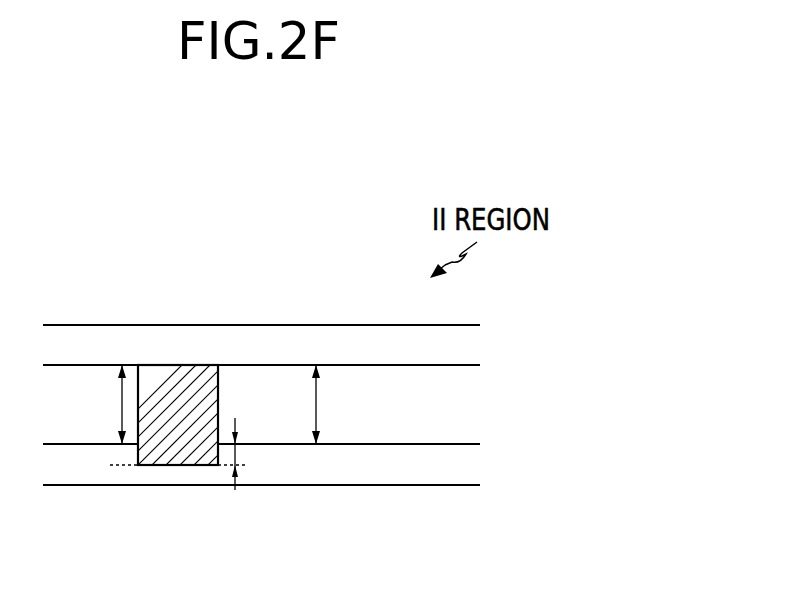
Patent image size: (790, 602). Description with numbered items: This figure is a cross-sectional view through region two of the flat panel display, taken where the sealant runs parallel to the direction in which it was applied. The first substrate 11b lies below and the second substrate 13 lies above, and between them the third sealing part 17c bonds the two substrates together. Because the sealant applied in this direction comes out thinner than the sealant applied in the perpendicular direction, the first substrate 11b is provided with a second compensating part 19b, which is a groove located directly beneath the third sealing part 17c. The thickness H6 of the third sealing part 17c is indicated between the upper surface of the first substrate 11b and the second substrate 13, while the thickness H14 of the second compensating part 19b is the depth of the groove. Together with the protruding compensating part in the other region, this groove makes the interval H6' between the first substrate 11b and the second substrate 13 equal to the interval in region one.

The second substrate 13 is at (278, 347).
The first substrate 11b is at (70, 467).
The third sealing part 17c is at (173, 392).
The second compensating part 19b is at (175, 467).
The thickness of the third sealing part H6 is at (102, 404).
The interval between the first substrate and the second substrate in region II H6' is at (337, 404).
The thickness of the second compensating part H14 is at (237, 453).